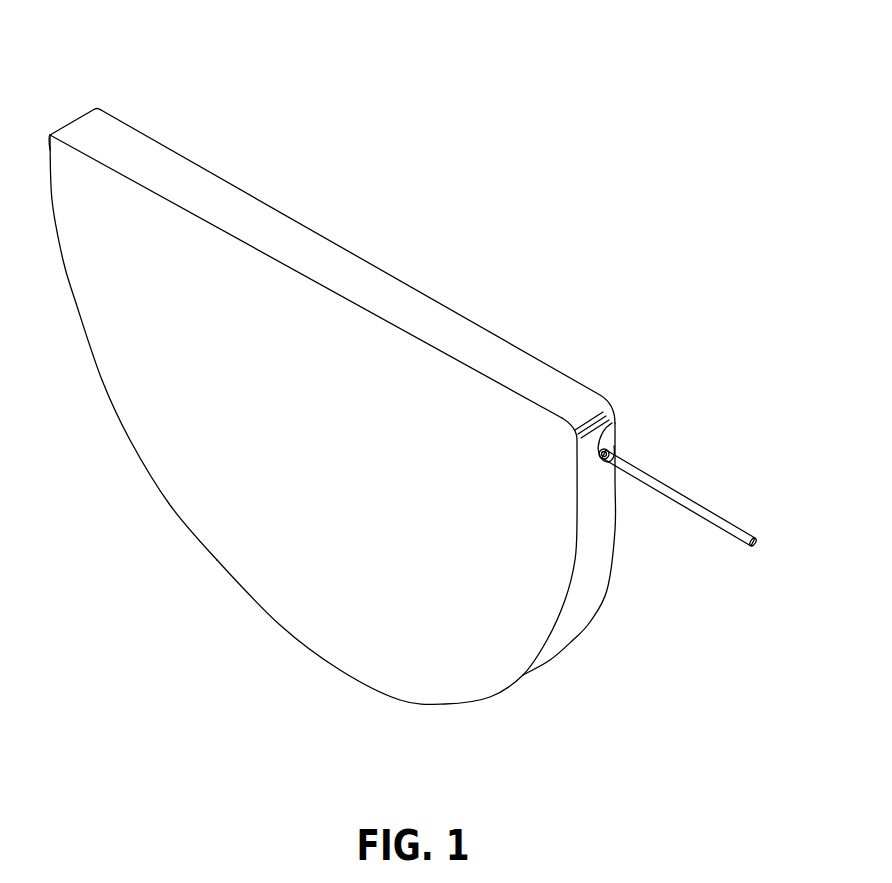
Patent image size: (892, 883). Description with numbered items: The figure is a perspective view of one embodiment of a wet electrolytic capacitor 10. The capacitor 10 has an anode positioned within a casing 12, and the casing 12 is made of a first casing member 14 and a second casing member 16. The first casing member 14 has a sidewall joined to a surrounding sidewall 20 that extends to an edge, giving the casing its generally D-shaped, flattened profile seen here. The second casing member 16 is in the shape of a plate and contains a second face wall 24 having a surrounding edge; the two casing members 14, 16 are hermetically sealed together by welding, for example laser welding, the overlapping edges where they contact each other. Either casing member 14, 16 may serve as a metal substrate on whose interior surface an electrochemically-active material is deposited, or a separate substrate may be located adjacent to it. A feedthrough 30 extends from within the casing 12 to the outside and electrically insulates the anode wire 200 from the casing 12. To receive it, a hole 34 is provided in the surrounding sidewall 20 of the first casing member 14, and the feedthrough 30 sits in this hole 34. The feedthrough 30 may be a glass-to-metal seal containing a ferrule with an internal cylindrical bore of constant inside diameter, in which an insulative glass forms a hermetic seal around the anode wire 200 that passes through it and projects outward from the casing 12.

The capacitor 10 is at (377, 210).
The casing 12 is at (68, 113).
The first casing member 14 is at (463, 317).
The second casing member 16 is at (128, 437).
The surrounding sidewall 20 is at (493, 362).
The second face wall 24 is at (288, 600).
The feedthrough 30 is at (662, 417).
The hole 34 is at (604, 444).
The anode wire 200 is at (715, 515).